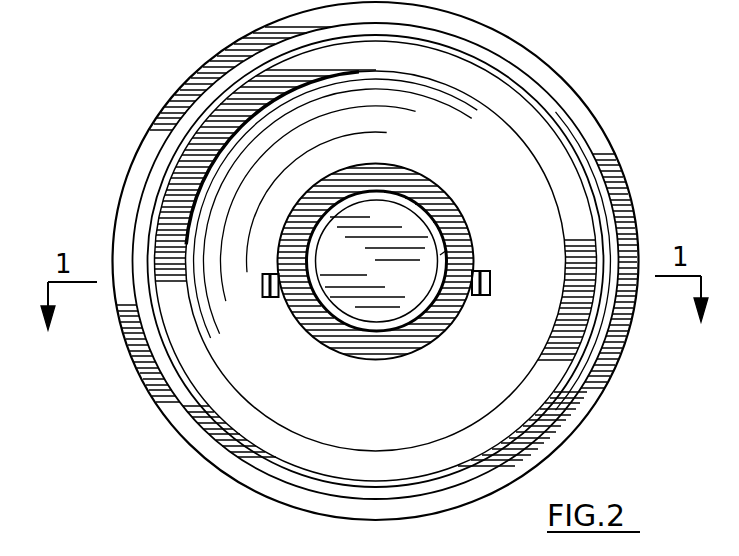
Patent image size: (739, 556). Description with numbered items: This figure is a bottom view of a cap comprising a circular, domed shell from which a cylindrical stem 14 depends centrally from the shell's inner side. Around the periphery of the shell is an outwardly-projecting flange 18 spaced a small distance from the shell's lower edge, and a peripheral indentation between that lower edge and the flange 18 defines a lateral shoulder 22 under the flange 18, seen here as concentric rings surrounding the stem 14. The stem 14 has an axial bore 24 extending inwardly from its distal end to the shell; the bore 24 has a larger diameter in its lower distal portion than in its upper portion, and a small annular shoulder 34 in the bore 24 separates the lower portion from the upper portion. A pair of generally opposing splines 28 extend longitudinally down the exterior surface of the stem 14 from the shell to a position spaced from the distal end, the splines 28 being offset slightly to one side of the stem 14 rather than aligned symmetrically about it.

The cylindrical stem 14 is at (418, 188).
The flange 18 is at (549, 76).
The lateral shoulder 22 is at (578, 118).
The axial bore 24 is at (418, 232).
The splines 28 is at (264, 297).
The annular shoulder 34 is at (440, 255).